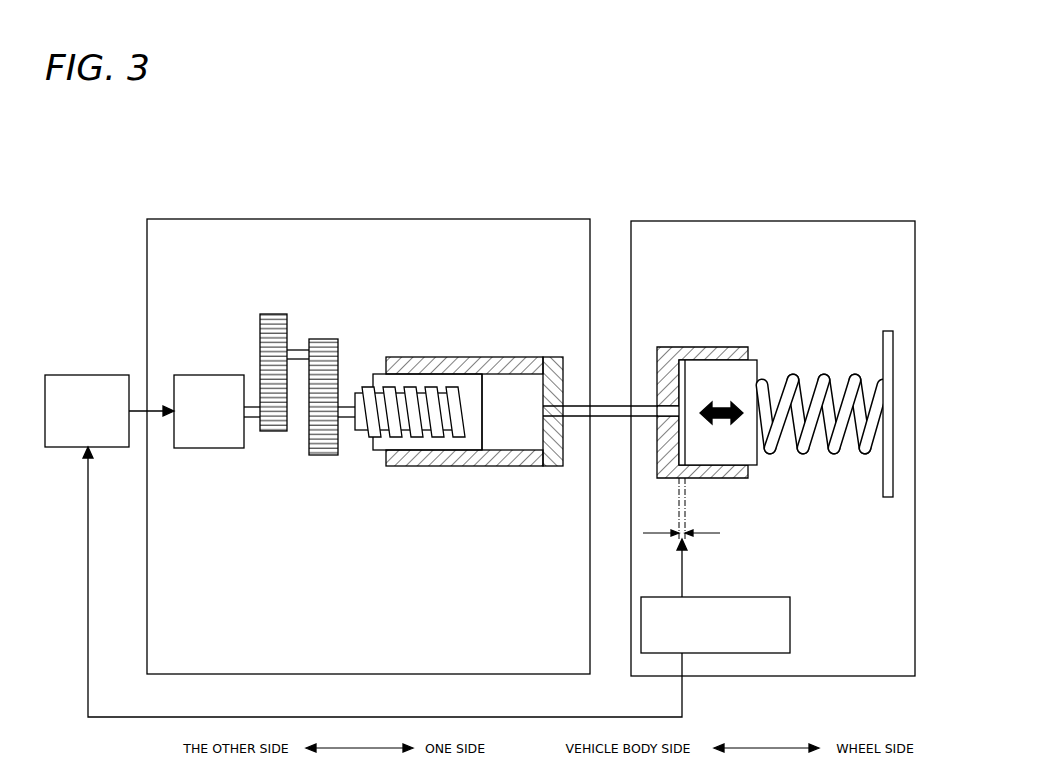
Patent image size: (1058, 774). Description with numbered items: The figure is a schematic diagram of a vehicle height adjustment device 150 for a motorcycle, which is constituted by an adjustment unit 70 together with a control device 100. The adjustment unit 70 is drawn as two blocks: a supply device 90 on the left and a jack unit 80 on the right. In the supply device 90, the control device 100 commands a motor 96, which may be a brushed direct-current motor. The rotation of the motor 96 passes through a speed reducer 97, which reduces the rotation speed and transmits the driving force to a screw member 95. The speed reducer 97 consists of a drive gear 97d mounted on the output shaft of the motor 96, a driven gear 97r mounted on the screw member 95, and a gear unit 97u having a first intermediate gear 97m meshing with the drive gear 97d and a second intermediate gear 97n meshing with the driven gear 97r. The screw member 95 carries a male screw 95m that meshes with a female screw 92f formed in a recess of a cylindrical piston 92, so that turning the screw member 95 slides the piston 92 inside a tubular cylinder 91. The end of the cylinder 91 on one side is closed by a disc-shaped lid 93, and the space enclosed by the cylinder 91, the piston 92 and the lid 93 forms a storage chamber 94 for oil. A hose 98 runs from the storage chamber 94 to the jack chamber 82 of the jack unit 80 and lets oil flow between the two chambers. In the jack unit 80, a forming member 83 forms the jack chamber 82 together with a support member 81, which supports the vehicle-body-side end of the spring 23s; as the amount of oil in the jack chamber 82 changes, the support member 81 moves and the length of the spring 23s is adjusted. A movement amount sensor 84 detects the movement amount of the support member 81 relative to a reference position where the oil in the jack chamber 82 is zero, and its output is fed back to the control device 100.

The vehicle height adjustment device 150 is at (133, 171).
The adjustment unit 70 is at (188, 196).
The supply device 90 is at (508, 219).
The jack unit 80 is at (855, 221).
The control device 100 is at (88, 375).
The motor 96 is at (204, 375).
The speed reducer 97 is at (290, 492).
The gear unit 97u is at (245, 291).
The drive gear 97d is at (270, 432).
The driven gear 97r is at (320, 456).
The first intermediate gear 97m is at (270, 313).
The second intermediate gear 97n is at (325, 394).
The screw member 95 is at (402, 454).
The male screw 95m is at (402, 440).
The piston 92 is at (430, 374).
The female screw 92f is at (378, 392).
The cylinder 91 is at (481, 379).
The lid 93 is at (566, 388).
The storage chamber 94 is at (504, 412).
The hose 98 is at (608, 405).
The forming member 83 is at (677, 347).
The jack chamber 82 is at (690, 358).
The support member 81 is at (730, 352).
The spring 23s is at (805, 455).
The movement amount sensor 84 is at (710, 597).